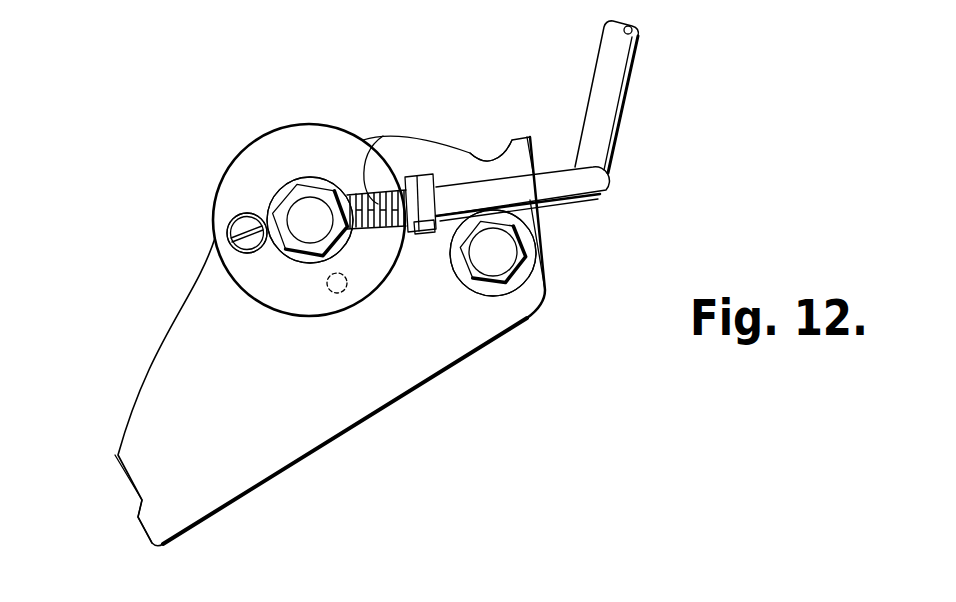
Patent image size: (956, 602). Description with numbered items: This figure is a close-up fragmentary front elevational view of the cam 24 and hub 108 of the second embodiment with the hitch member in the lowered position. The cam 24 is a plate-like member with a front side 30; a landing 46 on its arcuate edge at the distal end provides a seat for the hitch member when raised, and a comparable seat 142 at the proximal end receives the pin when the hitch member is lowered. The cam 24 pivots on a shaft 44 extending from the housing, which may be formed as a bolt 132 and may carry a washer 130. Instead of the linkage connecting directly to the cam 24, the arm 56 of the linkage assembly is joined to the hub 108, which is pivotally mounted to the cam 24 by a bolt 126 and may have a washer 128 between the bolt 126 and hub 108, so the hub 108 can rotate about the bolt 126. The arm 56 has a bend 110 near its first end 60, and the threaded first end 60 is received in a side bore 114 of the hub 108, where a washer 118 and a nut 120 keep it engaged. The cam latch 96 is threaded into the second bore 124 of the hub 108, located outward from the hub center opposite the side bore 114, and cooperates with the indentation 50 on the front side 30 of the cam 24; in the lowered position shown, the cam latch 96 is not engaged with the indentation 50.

The cam 24 is at (263, 450).
The front side 30 is at (178, 355).
The landing 46 is at (142, 502).
The hub 108 is at (275, 153).
The cam latch 96 is at (243, 227).
The second bore 124 is at (250, 250).
The bolt 126 is at (310, 207).
The washer 128 is at (360, 223).
The side bore 114 is at (365, 188).
The washer 118 is at (404, 178).
The bend 110 is at (595, 182).
The arm 56 is at (608, 90).
The nut 120 is at (420, 227).
The seat 142 is at (488, 157).
The first end 60 is at (337, 247).
The washer 130 is at (530, 240).
The shaft 44 is at (503, 258).
The bolt 132 is at (480, 280).
The indentation 50 is at (337, 293).